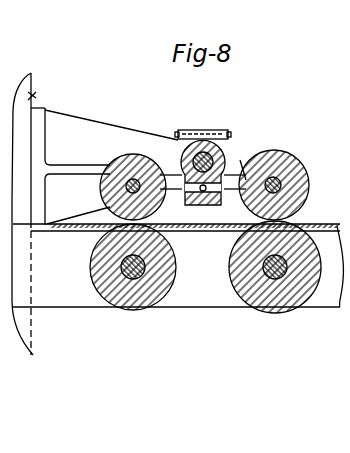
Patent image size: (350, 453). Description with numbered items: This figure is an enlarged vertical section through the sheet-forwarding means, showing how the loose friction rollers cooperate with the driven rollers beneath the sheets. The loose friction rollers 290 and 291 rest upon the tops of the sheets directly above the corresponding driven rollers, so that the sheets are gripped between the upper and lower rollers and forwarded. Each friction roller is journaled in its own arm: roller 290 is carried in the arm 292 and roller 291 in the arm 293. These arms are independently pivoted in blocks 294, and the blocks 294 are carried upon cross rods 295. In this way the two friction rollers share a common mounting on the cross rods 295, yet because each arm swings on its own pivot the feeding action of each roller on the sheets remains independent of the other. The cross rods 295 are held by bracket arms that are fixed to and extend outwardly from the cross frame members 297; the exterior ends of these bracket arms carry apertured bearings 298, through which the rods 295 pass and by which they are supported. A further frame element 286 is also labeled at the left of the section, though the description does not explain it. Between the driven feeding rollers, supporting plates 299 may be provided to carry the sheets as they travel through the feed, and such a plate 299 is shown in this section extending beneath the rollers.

The arm 286 is at (111, 166).
The friction roller 290 is at (135, 155).
The friction roller 291 is at (282, 158).
The arm 292 is at (223, 161).
The arm 293 is at (240, 160).
The block 294 is at (203, 200).
The cross rod 295 is at (203, 158).
The cross frame member 297 is at (33, 97).
The apertured bearing 298 is at (228, 133).
The supporting plate 299 is at (196, 223).